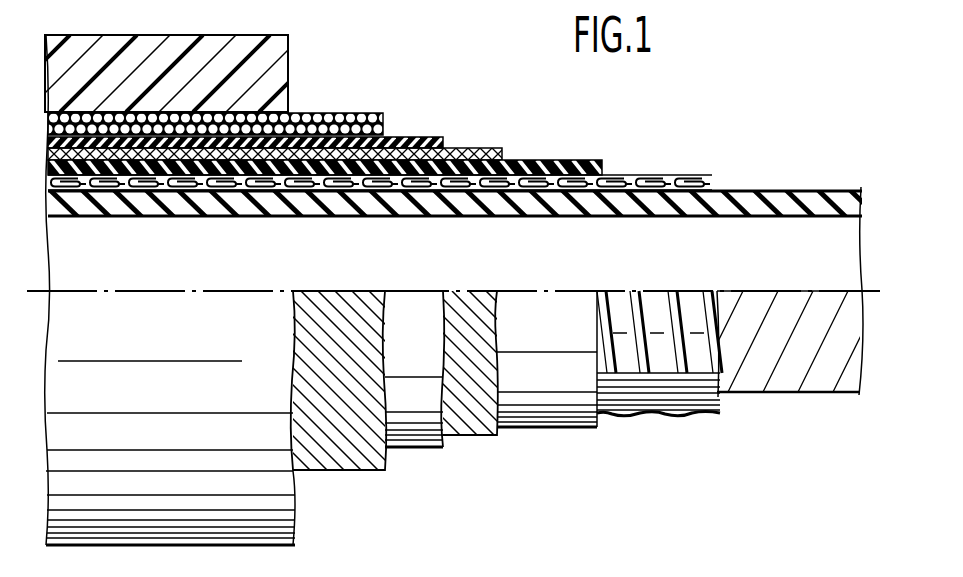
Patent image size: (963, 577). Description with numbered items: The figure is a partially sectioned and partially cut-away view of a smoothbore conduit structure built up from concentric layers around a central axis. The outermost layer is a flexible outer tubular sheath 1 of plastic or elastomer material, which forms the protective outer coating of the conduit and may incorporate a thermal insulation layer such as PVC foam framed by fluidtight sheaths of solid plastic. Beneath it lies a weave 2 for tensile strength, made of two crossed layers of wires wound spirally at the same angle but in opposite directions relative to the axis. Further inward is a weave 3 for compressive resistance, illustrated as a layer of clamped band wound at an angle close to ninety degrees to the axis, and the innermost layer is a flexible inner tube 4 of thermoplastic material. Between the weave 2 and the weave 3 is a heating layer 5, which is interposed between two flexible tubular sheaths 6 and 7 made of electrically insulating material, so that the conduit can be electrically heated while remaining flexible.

The flexible outer tubular sheath 1 is at (267, 70).
The weave for tensile strength 2 is at (372, 117).
The weave for compressive resistance 3 is at (670, 173).
The flexible inner tube 4 is at (767, 197).
The heating layer 5 is at (492, 153).
The flexible tubular sheath 6 is at (428, 137).
The flexible tubular sheath 7 is at (560, 168).